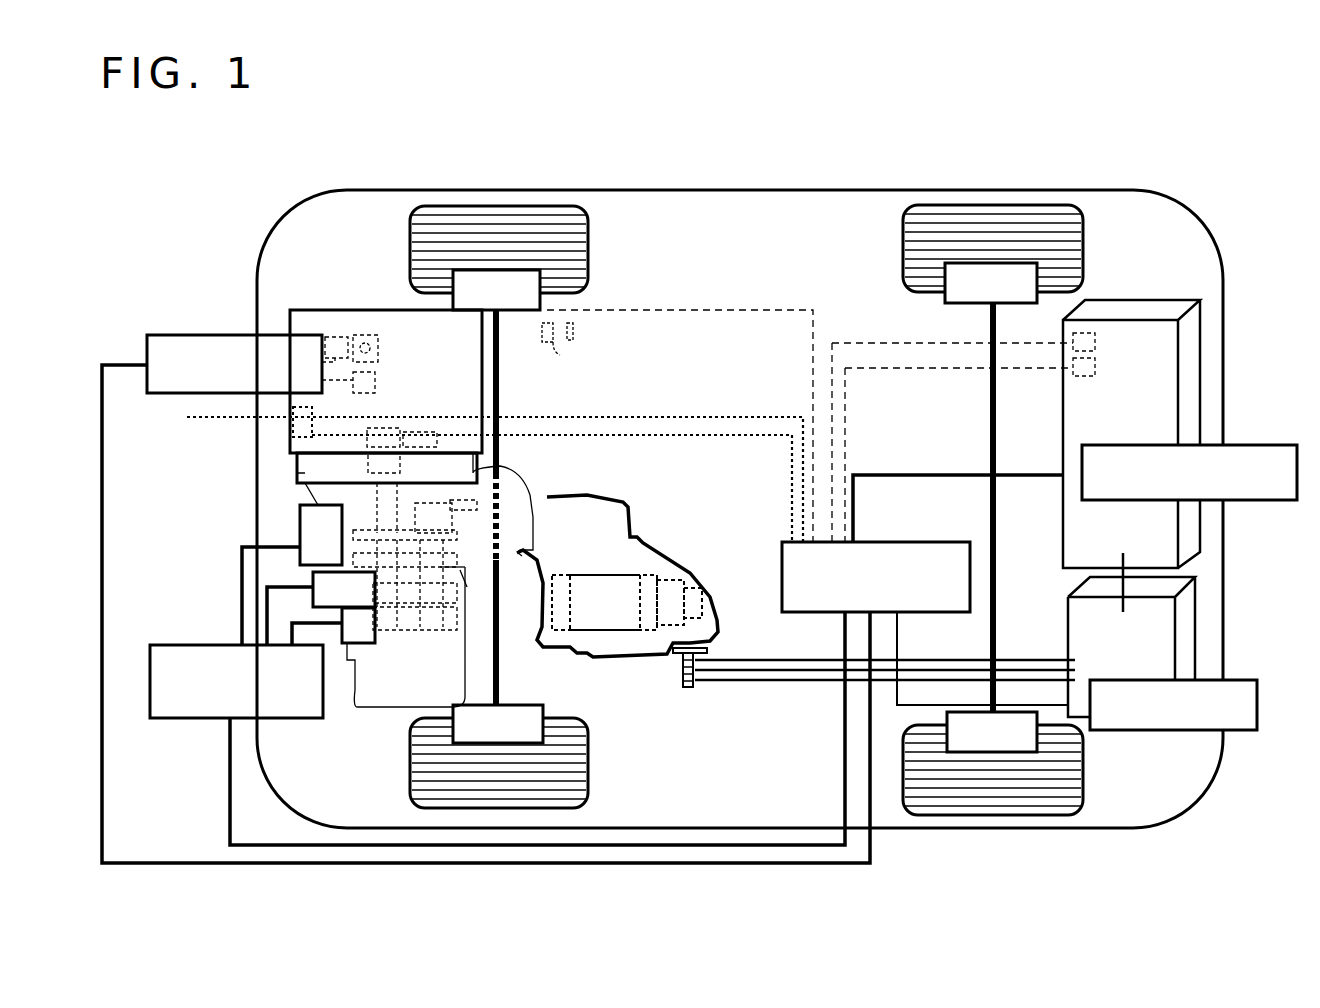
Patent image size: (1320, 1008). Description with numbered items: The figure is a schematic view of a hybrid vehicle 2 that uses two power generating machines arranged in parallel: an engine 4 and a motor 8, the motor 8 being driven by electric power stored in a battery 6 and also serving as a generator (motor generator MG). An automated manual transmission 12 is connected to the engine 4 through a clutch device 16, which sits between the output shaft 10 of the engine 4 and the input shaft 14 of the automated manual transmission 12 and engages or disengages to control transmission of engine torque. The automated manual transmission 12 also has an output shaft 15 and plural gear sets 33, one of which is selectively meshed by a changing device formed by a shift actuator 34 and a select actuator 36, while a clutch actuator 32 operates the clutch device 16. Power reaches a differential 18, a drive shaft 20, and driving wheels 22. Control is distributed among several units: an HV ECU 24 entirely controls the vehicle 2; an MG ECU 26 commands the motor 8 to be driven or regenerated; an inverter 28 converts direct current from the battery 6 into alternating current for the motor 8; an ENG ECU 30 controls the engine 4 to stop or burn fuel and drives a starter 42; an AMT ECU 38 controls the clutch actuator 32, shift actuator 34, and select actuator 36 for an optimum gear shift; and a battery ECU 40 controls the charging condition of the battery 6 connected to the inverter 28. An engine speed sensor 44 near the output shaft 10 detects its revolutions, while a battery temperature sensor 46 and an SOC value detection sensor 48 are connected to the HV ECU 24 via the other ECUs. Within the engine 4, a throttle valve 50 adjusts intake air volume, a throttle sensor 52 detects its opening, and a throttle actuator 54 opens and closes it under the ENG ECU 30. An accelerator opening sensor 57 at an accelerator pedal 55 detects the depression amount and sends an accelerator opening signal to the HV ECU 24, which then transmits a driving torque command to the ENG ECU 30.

The hybrid vehicle 2 is at (373, 132).
The engine 4 is at (457, 405).
The battery 6 is at (1160, 363).
The motor 8 is at (630, 575).
The output shaft of the engine 10 is at (392, 430).
The automated manual transmission 12 is at (365, 717).
The input shaft of the automated manual transmission 14 is at (375, 508).
The output shaft of the automated manual transmission 15 is at (435, 613).
The clutch device 16 is at (310, 467).
The differential 18 is at (520, 492).
The drive shaft 20 is at (500, 384).
The driving wheels 22 is at (490, 215).
The HV ECU 24 is at (785, 550).
The MG ECU 26 is at (1170, 733).
The inverter 28 is at (1185, 612).
The ENG ECU 30 is at (225, 343).
The clutch actuator 32 is at (305, 527).
The gear sets 33 is at (467, 587).
The shift actuator 34 is at (345, 613).
The select actuator 36 is at (305, 578).
The AMT ECU 38 is at (197, 712).
The battery ECU 40 is at (1240, 503).
The starter 42 is at (476, 472).
The engine speed sensor 44 is at (425, 432).
The battery temperature sensor 46 is at (1087, 333).
The SOC value detection sensor 48 is at (1097, 366).
The throttle valve 50 is at (358, 335).
The throttle sensor 52 is at (333, 336).
The throttle actuator 54 is at (360, 396).
The accelerator pedal 55 is at (560, 330).
The accelerator opening sensor 57 is at (555, 350).